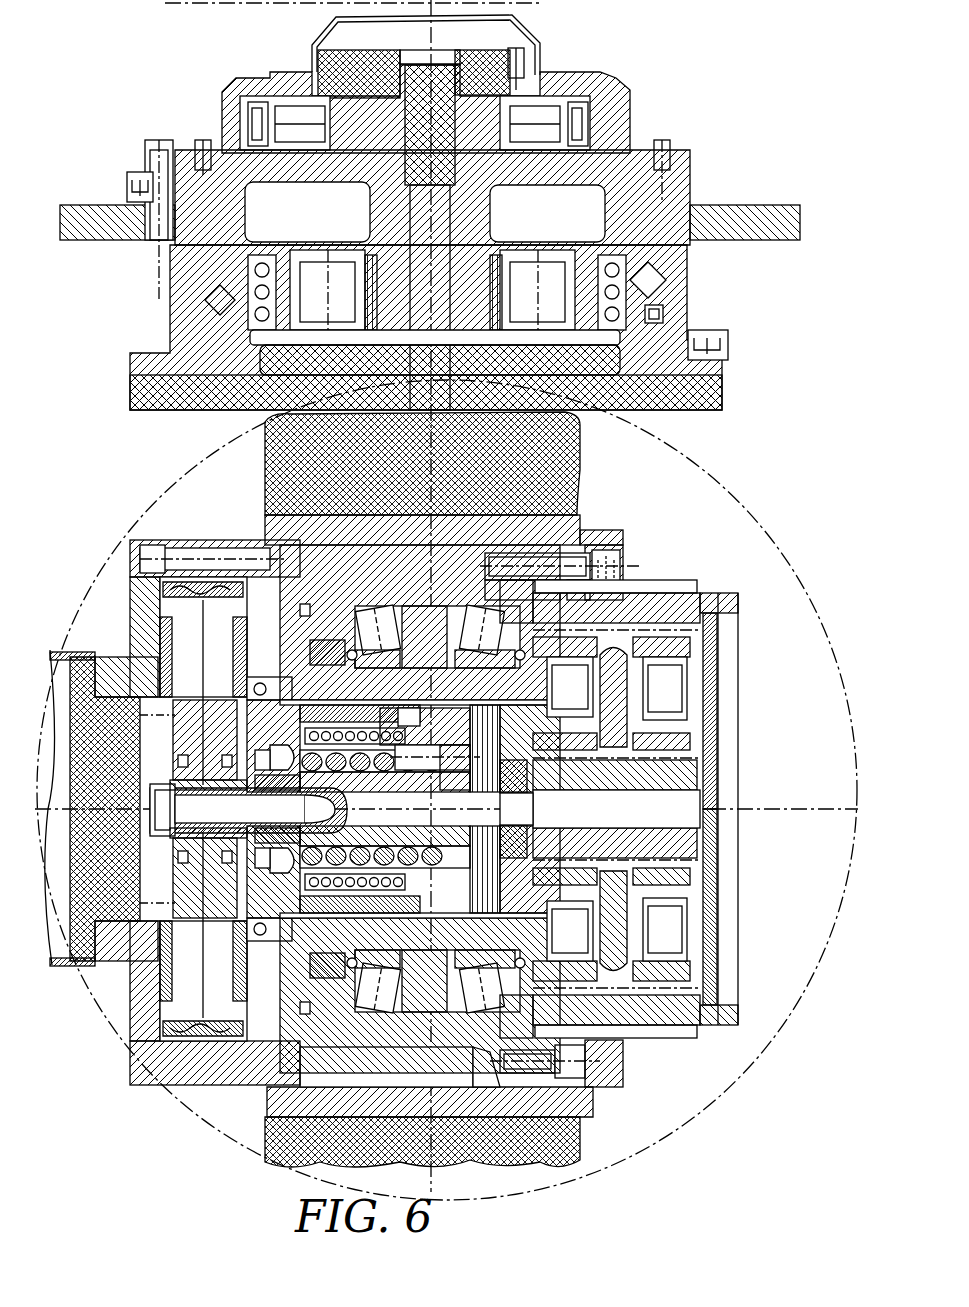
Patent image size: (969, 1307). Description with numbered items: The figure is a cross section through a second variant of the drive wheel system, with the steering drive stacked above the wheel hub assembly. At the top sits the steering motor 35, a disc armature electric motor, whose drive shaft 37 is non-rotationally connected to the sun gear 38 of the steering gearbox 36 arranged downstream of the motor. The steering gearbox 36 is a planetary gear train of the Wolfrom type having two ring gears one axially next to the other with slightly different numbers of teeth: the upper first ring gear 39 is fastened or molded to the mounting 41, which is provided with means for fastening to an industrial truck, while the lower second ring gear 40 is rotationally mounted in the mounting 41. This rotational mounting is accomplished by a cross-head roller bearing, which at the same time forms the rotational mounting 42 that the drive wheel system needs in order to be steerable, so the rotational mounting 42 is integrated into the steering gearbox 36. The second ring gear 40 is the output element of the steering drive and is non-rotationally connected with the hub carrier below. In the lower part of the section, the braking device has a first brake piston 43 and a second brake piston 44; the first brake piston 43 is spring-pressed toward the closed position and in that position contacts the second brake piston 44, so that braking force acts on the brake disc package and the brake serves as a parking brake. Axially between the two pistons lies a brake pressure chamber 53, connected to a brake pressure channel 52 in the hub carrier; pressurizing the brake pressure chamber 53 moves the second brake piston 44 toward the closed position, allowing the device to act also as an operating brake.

The steering motor 35 is at (630, 75).
The steering gearbox 36 is at (725, 287).
The drive shaft 37 is at (465, 128).
The sun gear 38 is at (480, 240).
The first ring gear 39 is at (180, 290).
The second ring gear 40 is at (250, 300).
The mounting 41 is at (232, 225).
The rotational mounting 42 is at (650, 295).
The first brake piston 43 is at (462, 768).
The second brake piston 44 is at (475, 775).
The brake pressure channel 52 is at (272, 570).
The brake pressure chamber 53 is at (408, 705).